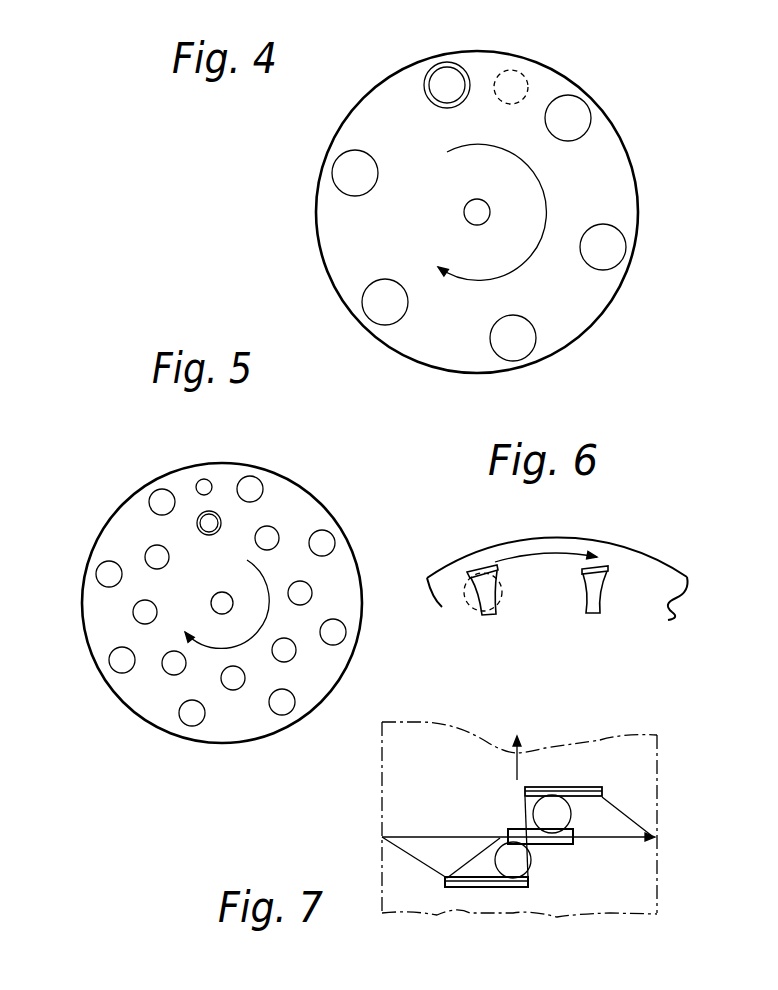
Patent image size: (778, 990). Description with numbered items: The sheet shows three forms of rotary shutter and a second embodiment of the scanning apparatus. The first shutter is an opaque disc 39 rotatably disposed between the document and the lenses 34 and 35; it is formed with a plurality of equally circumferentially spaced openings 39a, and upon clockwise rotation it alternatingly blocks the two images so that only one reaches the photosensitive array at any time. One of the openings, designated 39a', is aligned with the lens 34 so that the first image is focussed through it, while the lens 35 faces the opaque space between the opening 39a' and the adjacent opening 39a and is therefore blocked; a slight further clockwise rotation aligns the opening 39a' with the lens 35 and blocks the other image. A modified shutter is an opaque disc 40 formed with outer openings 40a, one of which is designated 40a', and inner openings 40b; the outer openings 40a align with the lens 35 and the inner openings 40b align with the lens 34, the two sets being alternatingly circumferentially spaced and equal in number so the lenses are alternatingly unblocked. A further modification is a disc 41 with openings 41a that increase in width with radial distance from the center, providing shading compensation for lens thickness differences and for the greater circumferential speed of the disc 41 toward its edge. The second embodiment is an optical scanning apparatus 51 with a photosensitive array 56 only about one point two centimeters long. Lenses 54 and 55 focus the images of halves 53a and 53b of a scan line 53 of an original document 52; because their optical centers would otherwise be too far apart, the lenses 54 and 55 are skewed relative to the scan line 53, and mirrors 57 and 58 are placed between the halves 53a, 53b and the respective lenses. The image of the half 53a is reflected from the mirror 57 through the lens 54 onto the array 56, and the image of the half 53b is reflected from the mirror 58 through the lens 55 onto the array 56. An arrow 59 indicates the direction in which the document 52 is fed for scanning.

In FIG. 4, the lens 34 is at (444, 76).
In FIG. 5, the lens 34 is at (209, 535).
In FIG. 6, the lens 34 is at (500, 606).
In FIG. 4, the lens 35 is at (520, 82).
In FIG. 5, the lens 35 is at (203, 479).
In FIG. 4, the disc 39 is at (628, 157).
In FIG. 4, the openings 39a is at (469, 240).
In FIG. 4, the opening 39a' is at (400, 82).
In FIG. 5, the disc 40 is at (327, 511).
In FIG. 5, the outer openings 40a is at (218, 612).
In FIG. 5, the outer opening 40a' is at (239, 456).
In FIG. 5, the inner openings 40b is at (276, 530).
In FIG. 6, the disc 41 is at (681, 604).
In FIG. 6, the openings 41a is at (478, 568).
In FIG. 7, the optical scanning apparatus 51 is at (620, 722).
In FIG. 7, the original document 52 is at (402, 769).
In FIG. 7, the scan line 53 is at (466, 792).
In FIG. 7, the half of scan line 53a is at (428, 835).
In FIG. 7, the half of scan line 53b is at (605, 842).
In FIG. 7, the lens 54 is at (512, 862).
In FIG. 7, the lens 55 is at (563, 823).
In FIG. 7, the photosensitive array 56 is at (562, 846).
In FIG. 7, the mirror 57 is at (462, 888).
In FIG. 7, the mirror 58 is at (586, 787).
In FIG. 7, the arrow 59 is at (520, 752).